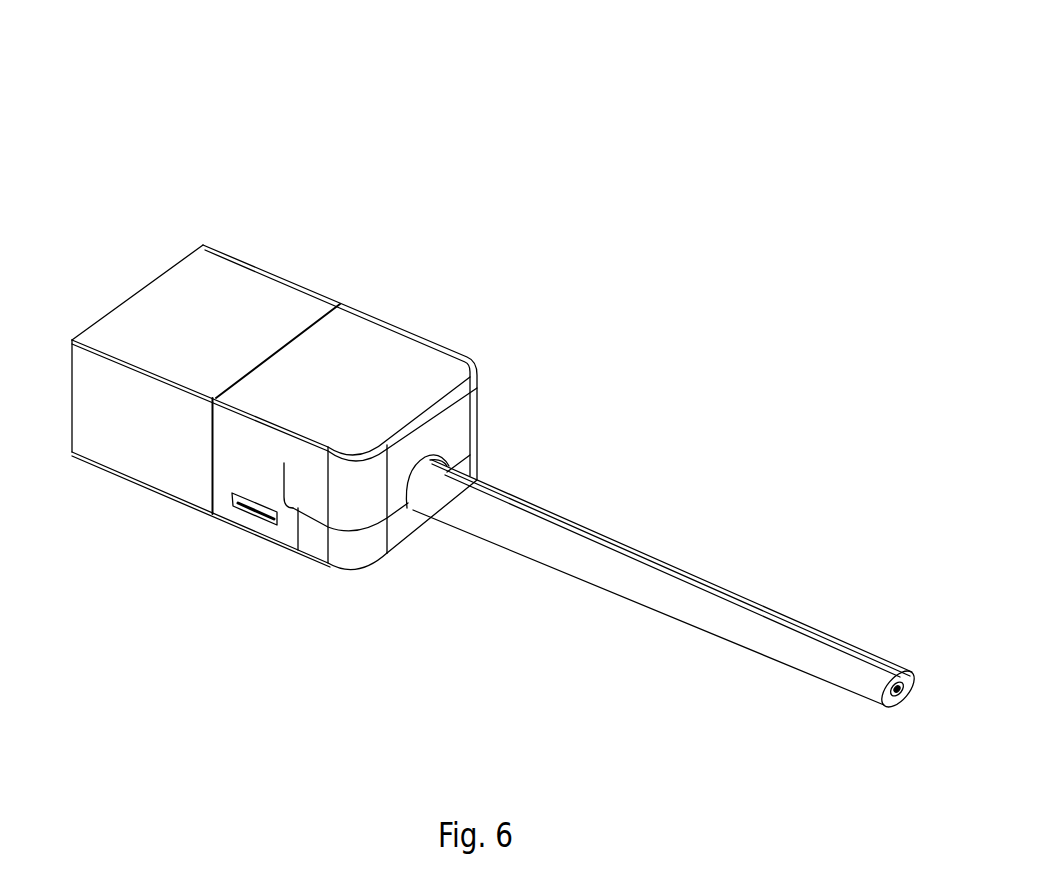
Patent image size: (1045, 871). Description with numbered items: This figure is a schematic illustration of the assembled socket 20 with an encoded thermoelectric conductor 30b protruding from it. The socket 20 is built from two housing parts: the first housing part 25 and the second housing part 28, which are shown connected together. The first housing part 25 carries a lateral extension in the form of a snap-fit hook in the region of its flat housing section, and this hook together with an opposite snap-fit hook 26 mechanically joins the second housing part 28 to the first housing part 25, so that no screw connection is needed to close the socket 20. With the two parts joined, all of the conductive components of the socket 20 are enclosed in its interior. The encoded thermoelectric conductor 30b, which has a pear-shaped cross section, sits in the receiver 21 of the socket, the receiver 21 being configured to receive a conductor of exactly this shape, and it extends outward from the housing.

The socket 20 is at (295, 190).
The receiver 21 is at (428, 521).
The first housing part 25 is at (152, 445).
The snap-fit hook 26 is at (258, 508).
The second housing part 28 is at (375, 385).
The encoded thermoelectric conductor 30b is at (678, 595).